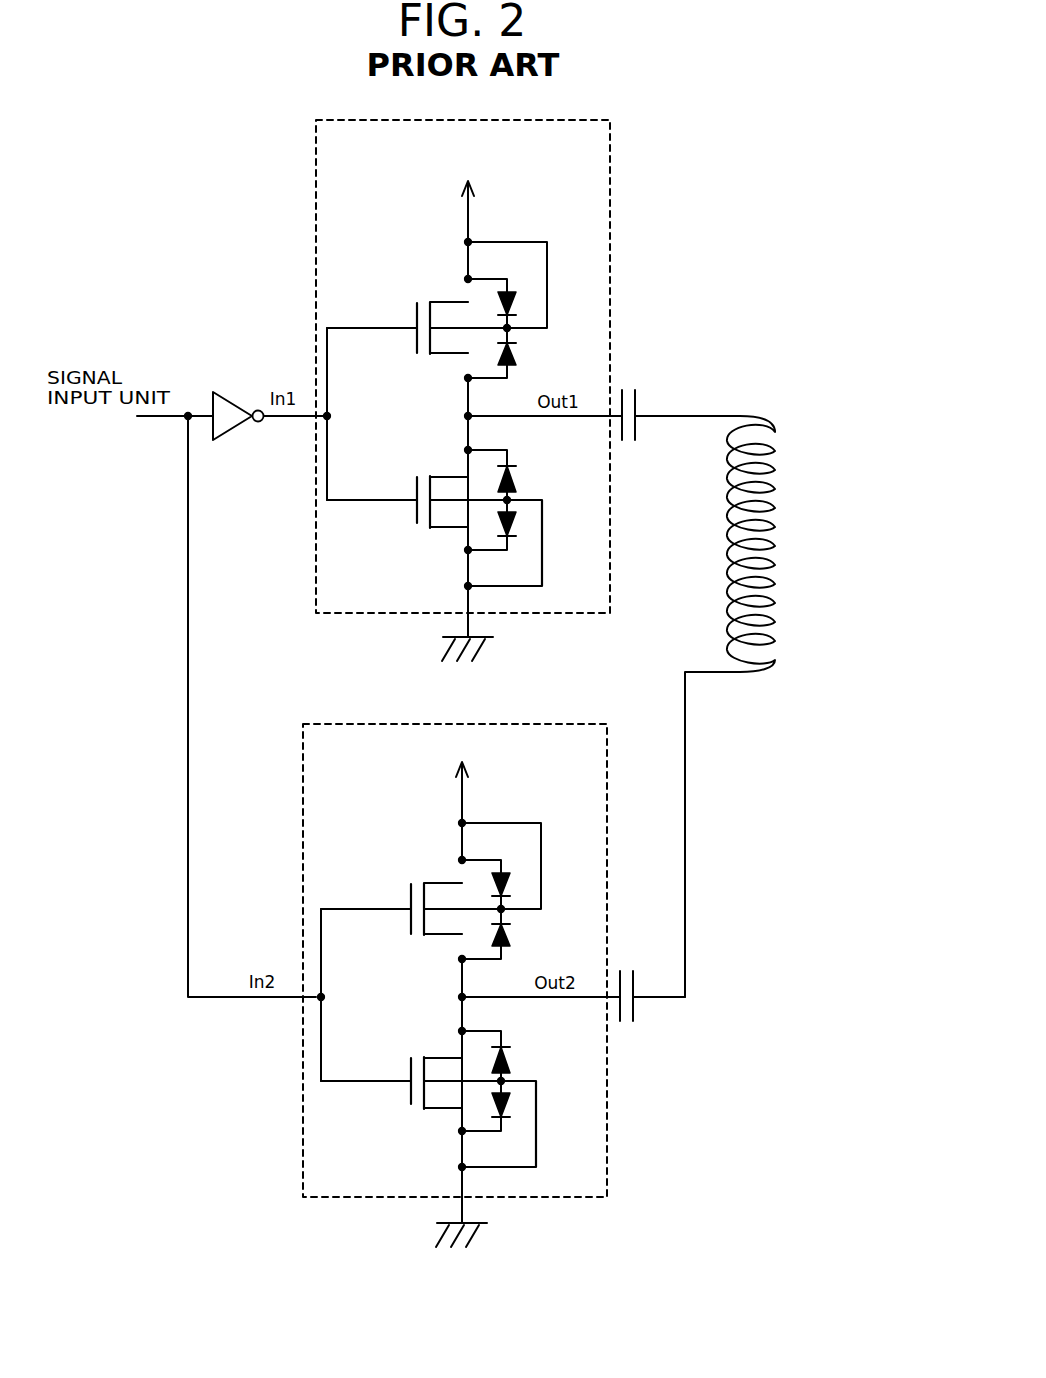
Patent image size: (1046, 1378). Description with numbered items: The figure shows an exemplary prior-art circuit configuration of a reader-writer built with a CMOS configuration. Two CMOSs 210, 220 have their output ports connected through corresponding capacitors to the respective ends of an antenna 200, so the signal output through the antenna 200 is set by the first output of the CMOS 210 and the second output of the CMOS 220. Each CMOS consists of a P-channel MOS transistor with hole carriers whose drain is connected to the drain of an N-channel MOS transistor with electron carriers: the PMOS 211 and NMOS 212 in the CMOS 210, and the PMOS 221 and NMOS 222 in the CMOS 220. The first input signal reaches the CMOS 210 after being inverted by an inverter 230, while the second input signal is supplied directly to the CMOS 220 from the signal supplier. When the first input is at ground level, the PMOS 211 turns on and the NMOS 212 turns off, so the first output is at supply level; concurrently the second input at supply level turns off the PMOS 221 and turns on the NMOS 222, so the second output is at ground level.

The antenna 200 is at (775, 478).
The CMOS 210 is at (612, 192).
The PMOS 211 is at (420, 292).
The NMOS 212 is at (407, 518).
The CMOS 220 is at (607, 1150).
The PMOS 221 is at (415, 894).
The NMOS 222 is at (428, 1089).
The inverter 230 is at (227, 395).